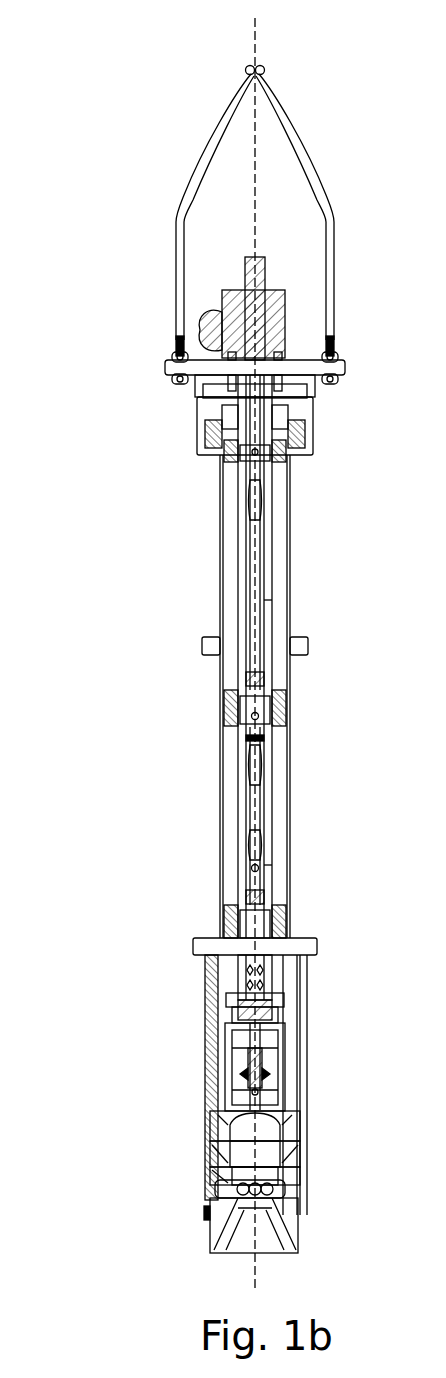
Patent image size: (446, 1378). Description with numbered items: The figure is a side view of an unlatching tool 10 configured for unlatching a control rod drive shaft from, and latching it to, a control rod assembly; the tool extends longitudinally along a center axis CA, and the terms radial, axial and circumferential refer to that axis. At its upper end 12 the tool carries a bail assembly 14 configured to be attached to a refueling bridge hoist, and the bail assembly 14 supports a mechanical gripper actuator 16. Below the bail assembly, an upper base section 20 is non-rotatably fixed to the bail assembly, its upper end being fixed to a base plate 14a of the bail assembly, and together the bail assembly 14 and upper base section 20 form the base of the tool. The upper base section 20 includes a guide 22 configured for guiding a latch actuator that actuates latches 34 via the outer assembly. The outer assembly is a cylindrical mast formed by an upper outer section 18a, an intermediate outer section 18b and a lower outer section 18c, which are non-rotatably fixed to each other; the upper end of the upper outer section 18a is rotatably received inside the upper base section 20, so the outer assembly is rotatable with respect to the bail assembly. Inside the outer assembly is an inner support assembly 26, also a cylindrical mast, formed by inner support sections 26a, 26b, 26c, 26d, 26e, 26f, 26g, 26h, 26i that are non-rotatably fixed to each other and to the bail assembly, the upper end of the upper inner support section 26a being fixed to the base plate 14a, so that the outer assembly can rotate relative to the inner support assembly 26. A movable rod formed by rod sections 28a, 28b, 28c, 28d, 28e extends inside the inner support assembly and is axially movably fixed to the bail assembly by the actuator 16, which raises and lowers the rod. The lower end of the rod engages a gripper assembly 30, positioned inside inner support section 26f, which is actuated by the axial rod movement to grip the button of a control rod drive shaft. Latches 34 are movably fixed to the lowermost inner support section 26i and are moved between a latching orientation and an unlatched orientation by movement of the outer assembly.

The unlatching tool 10 is at (72, 1246).
The upper end 12 is at (172, 72).
The bail assembly 14 is at (150, 160).
The base plate 14a is at (305, 366).
The mechanical gripper actuator 16 is at (205, 292).
The upper outer section 18a is at (220, 500).
The intermediate outer section 18b is at (220, 750).
The lower outer section 18c is at (205, 1008).
The upper base section 20 is at (314, 428).
The guide 22 is at (195, 410).
The inner support assembly 26 is at (283, 590).
The upper inner support section 26a is at (240, 470).
The inner support section 26b is at (224, 700).
The inner support section 26c is at (238, 802).
The inner support section 26d is at (224, 922).
The inner support section 26e is at (240, 965).
The inner support section 26f is at (222, 1045).
The inner support section 26g is at (212, 1118).
The inner support section 26h is at (213, 1150).
The lowermost inner support section 26i is at (205, 1180).
The rod section 28a is at (252, 256).
The rod section 28b is at (250, 553).
The rod section 28c is at (260, 797).
The rod section 28d is at (283, 1003).
The rod section 28e is at (262, 1071).
The gripper assembly 30 is at (230, 1068).
The latches 34 is at (222, 1194).
The center axis CA is at (258, 36).